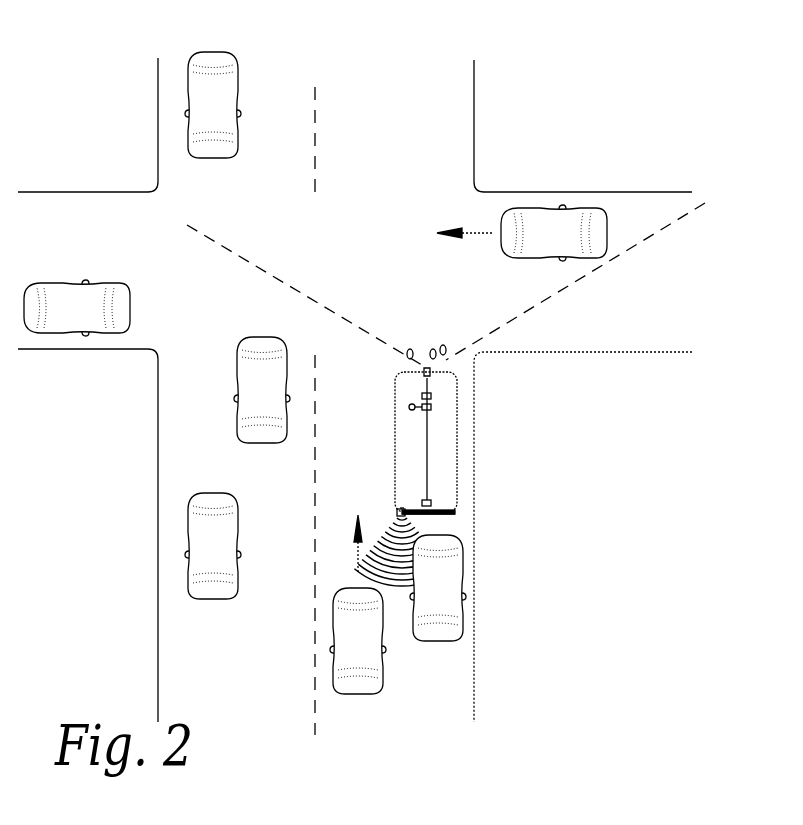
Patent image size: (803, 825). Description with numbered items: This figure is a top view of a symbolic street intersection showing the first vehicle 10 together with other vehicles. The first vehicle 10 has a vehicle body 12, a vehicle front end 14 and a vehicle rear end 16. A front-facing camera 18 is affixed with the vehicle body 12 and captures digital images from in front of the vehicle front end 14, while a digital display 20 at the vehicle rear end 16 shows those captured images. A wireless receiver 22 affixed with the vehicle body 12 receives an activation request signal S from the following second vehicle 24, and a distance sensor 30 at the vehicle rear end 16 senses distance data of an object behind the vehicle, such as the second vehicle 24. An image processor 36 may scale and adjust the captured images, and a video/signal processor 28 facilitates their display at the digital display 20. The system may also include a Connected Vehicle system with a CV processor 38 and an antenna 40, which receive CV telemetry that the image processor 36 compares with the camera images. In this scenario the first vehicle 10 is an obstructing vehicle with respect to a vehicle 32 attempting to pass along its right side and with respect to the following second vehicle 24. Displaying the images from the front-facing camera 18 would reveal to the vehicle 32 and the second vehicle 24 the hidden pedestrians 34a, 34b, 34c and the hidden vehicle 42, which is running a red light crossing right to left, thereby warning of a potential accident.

The first vehicle 10 is at (458, 432).
The vehicle body 12 is at (447, 452).
The vehicle front end 14 is at (478, 354).
The vehicle rear end 16 is at (455, 512).
The front-facing camera 18 is at (424, 372).
The digital display 20 is at (440, 516).
The wireless receiver 22 is at (400, 508).
The second vehicle 24 is at (426, 598).
The video/signal processor 28 is at (432, 503).
The distance sensor 30 is at (397, 512).
The vehicle 32 is at (347, 655).
The hidden pedestrian 34a is at (410, 349).
The hidden pedestrian 34b is at (433, 349).
The hidden pedestrian 34c is at (445, 345).
The image processor 36 is at (432, 396).
The CV processor 38 is at (432, 408).
The antenna 40 is at (409, 408).
The hidden vehicle 42 is at (544, 240).
The activation request signal S is at (385, 572).